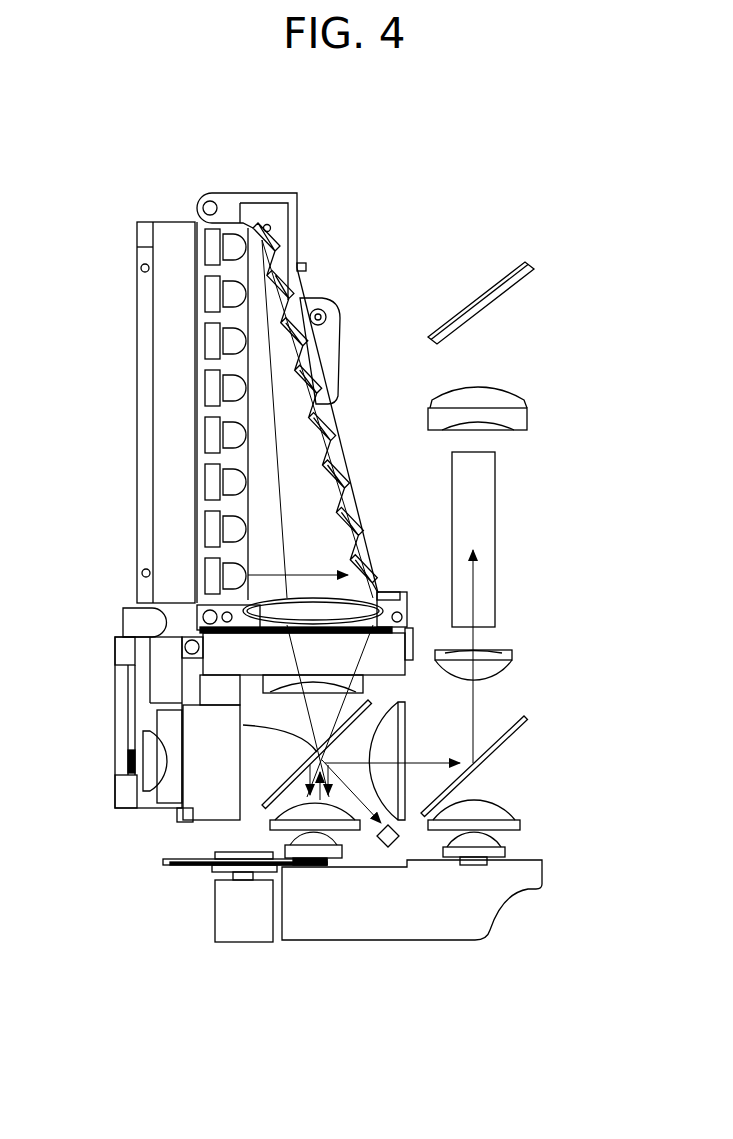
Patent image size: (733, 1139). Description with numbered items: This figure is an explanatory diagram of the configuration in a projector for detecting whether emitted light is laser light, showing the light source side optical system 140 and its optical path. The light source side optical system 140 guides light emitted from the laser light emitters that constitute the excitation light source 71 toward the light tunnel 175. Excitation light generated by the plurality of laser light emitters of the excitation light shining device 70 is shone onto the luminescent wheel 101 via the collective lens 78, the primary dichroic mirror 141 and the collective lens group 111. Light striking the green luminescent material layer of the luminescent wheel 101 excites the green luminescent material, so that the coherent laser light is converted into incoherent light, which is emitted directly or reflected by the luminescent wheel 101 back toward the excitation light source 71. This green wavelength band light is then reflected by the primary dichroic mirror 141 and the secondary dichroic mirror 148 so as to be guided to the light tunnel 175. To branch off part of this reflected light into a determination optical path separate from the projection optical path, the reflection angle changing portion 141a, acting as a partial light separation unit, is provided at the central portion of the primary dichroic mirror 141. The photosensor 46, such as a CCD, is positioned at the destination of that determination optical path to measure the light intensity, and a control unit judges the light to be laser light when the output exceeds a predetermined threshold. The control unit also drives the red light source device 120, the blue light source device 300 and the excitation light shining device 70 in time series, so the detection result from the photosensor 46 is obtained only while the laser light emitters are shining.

The excitation light shining device 70 is at (172, 252).
The excitation light source 71 is at (210, 391).
The collective lens 78 is at (287, 608).
The red light source device 120 is at (113, 670).
The primary dichroic mirror 141 is at (262, 806).
The reflection angle changing portion 141a is at (243, 725).
The secondary dichroic mirror 148 is at (505, 741).
The light tunnel 175 is at (480, 542).
The light source side optical system 140 is at (582, 778).
The photosensor 46 is at (393, 847).
The collective lens group 111 is at (328, 867).
The luminescent wheel 101 is at (180, 867).
The blue light source device 300 is at (508, 908).